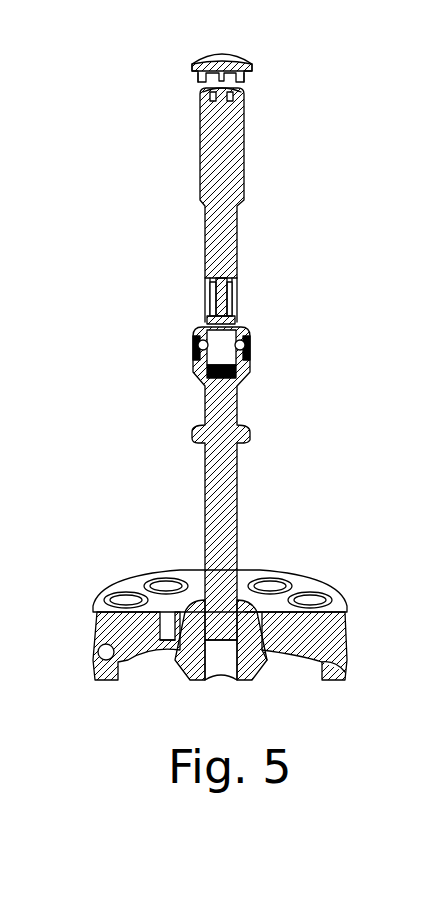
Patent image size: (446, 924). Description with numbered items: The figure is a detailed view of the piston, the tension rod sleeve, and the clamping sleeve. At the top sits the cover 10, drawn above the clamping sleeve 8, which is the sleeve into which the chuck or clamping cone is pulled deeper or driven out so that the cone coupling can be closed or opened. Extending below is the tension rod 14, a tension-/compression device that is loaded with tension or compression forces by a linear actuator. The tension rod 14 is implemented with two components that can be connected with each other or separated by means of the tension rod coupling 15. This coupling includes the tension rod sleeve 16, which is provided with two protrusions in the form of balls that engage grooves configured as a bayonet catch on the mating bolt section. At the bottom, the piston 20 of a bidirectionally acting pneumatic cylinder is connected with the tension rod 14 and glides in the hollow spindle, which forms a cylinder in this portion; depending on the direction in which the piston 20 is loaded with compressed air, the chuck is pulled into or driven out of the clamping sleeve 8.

The clamping sleeve 8 is at (230, 150).
The cover 10 is at (230, 58).
The tension rod 14 is at (180, 318).
The tension rod coupling 15 is at (284, 348).
The tension rod sleeve 16 is at (240, 386).
The piston 20 is at (107, 634).